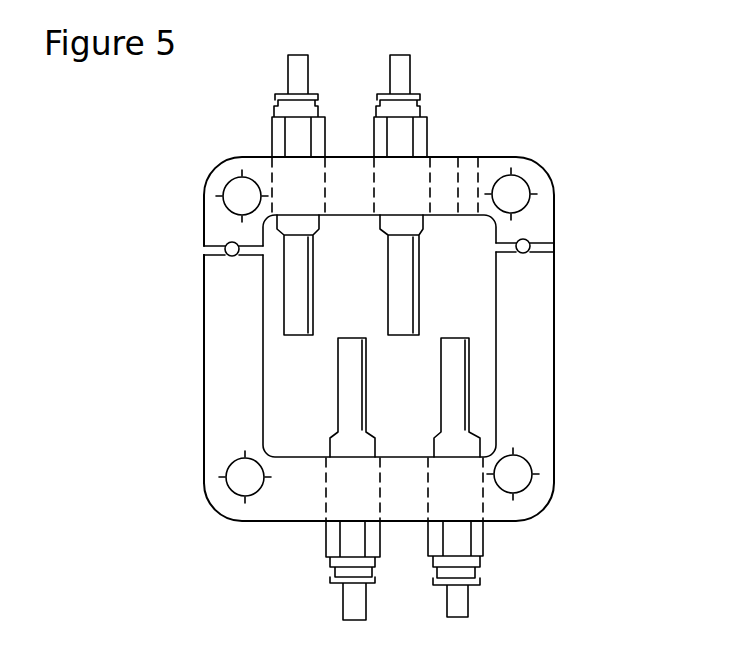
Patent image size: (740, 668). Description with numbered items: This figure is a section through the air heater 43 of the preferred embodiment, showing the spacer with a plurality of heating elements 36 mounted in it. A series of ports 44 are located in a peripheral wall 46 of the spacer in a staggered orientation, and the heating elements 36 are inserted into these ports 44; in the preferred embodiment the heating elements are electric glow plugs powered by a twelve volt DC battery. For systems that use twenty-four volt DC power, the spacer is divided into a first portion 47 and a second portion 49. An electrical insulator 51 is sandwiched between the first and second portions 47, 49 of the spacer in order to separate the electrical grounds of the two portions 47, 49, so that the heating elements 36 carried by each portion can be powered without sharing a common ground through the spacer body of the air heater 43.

The air heater 43 is at (402, 337).
The ports 44 is at (432, 172).
The peripheral wall 46 is at (550, 157).
The first portion 47 is at (218, 192).
The second portion 49 is at (217, 343).
The electrical insulator 51 is at (232, 257).
The heating elements 36 is at (470, 600).